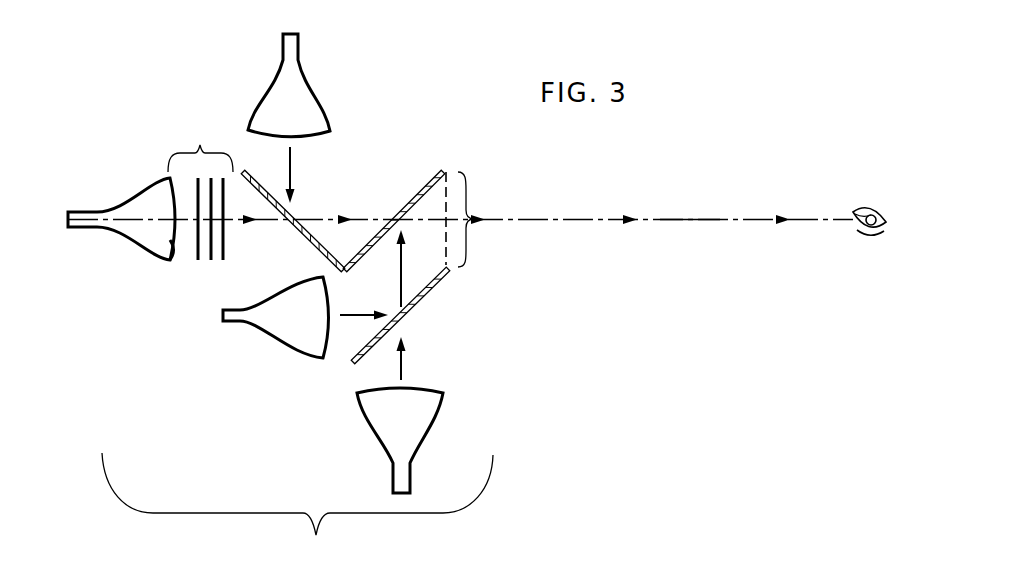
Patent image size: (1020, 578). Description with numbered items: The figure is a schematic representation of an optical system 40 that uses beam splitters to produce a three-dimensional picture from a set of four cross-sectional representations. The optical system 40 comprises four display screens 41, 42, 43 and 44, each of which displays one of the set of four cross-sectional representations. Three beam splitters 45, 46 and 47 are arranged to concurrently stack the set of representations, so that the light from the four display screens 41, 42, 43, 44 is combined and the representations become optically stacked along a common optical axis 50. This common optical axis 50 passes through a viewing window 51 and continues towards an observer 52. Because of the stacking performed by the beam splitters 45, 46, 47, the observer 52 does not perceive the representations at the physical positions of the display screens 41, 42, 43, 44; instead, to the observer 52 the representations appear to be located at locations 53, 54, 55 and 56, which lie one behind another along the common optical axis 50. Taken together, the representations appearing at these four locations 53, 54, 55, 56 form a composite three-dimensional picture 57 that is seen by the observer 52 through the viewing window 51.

The optical system 40 is at (297, 507).
The display screen 41 is at (430, 412).
The display screen 42 is at (287, 333).
The display screen 43 is at (313, 100).
The display screen 44 is at (132, 236).
The beam splitter 45 is at (423, 298).
The beam splitter 46 is at (400, 212).
The beam splitter 47 is at (297, 228).
The common optical axis 50 is at (692, 218).
The viewing window 51 is at (476, 219).
The observer 52 is at (877, 213).
The location 53 is at (224, 262).
The location 54 is at (211, 262).
The location 55 is at (198, 261).
The location 56 is at (177, 252).
The composite three-dimensional picture 57 is at (200, 147).